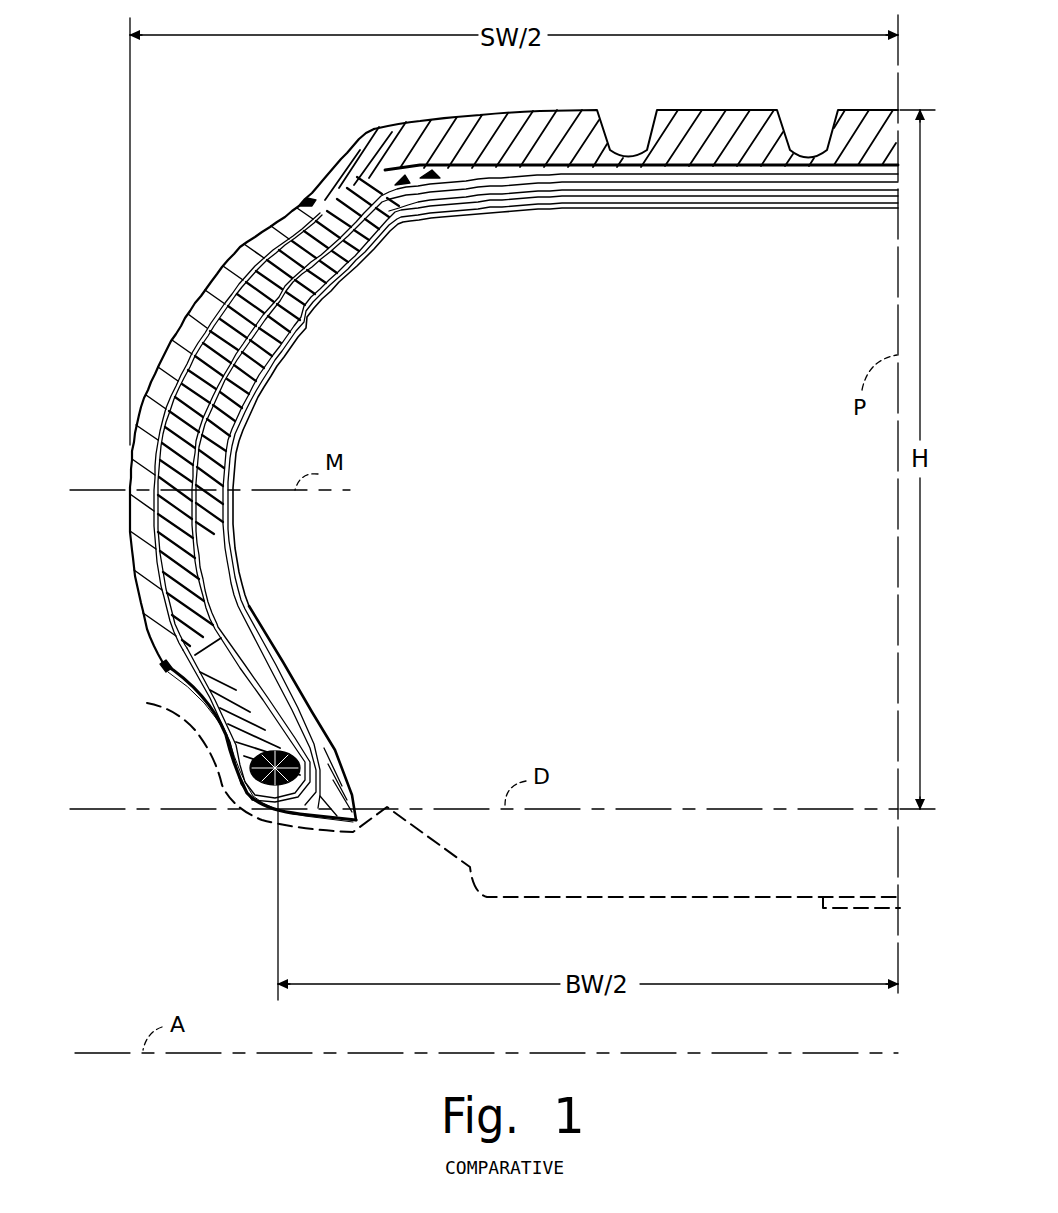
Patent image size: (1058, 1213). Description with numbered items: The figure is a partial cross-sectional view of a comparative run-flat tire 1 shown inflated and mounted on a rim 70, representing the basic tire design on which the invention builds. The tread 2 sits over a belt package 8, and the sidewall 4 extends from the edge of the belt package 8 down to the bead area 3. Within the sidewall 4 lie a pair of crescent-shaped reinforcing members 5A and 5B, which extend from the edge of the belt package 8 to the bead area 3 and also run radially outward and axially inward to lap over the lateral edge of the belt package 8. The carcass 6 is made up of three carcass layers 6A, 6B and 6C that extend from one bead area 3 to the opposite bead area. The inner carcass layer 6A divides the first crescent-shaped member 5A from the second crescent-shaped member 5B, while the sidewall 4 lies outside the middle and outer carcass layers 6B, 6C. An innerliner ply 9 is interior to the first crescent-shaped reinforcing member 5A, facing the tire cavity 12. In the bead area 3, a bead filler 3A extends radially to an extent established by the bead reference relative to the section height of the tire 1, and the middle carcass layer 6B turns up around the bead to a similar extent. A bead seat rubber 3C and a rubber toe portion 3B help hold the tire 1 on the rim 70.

The tire 1 is at (235, 166).
The tread portion 2 is at (722, 140).
The bead area 3 is at (338, 722).
The bead filler 3A is at (268, 685).
The rubber toe portion 3B is at (315, 826).
The bead seat rubber 3C is at (218, 761).
The sidewall 4 is at (540, 104).
The first crescent-shaped reinforcing member 5A is at (335, 258).
The second crescent-shaped reinforcing member 5B is at (262, 346).
The carcass 6 is at (598, 209).
The inner carcass layer 6A is at (195, 563).
The middle carcass layer 6B is at (205, 590).
The outer carcass layer 6C is at (212, 590).
The belt package 8 is at (392, 153).
The innerliner ply 9 is at (305, 321).
The tire inner cavity 12 is at (645, 504).
The rim 70 is at (478, 864).